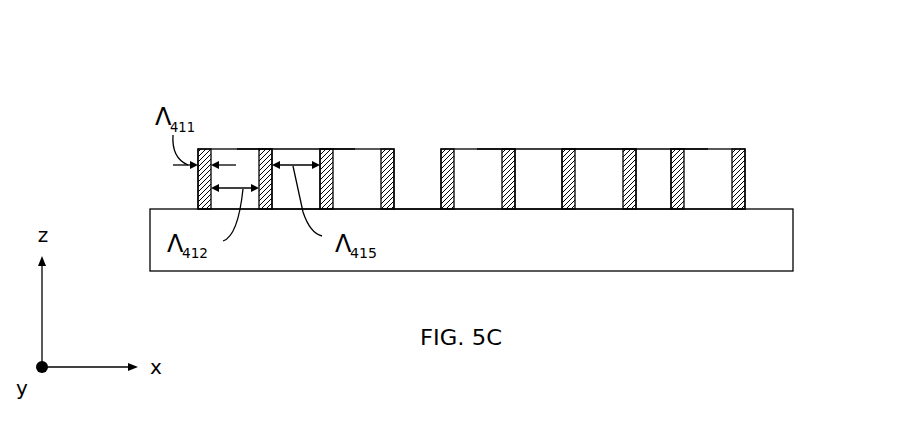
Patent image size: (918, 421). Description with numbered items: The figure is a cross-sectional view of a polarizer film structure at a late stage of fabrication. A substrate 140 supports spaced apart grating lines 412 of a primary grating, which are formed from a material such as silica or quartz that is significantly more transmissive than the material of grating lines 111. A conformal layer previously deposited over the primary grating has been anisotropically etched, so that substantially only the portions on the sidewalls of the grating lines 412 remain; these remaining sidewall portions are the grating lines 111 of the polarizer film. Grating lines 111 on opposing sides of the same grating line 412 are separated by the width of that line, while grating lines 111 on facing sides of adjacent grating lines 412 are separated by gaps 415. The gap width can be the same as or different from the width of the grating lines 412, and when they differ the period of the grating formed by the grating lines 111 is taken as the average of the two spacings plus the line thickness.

The grating lines 111 is at (266, 148).
The grating lines 412 is at (355, 150).
The gaps 415 is at (287, 187).
The substrate 140 is at (492, 253).